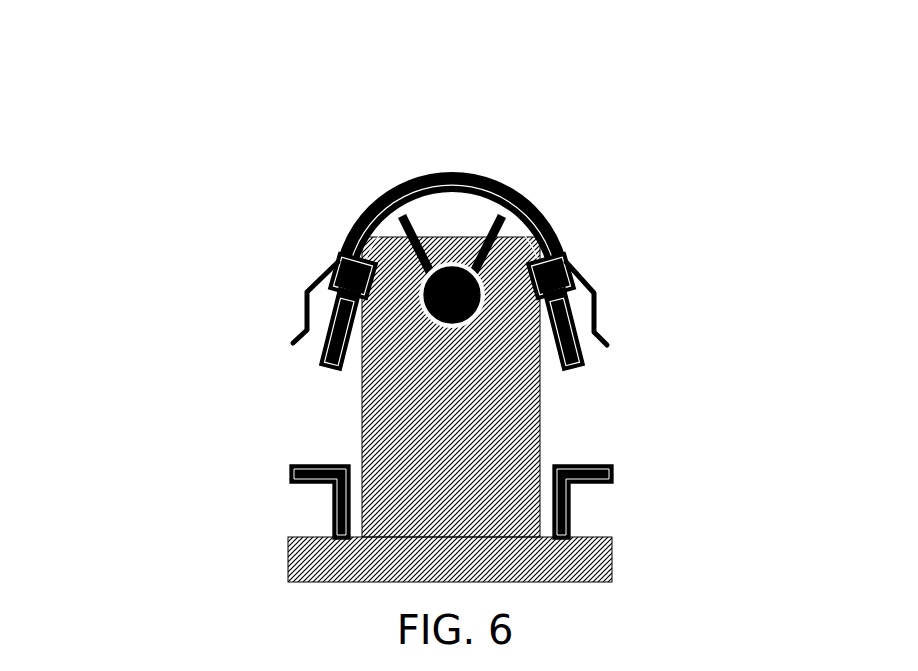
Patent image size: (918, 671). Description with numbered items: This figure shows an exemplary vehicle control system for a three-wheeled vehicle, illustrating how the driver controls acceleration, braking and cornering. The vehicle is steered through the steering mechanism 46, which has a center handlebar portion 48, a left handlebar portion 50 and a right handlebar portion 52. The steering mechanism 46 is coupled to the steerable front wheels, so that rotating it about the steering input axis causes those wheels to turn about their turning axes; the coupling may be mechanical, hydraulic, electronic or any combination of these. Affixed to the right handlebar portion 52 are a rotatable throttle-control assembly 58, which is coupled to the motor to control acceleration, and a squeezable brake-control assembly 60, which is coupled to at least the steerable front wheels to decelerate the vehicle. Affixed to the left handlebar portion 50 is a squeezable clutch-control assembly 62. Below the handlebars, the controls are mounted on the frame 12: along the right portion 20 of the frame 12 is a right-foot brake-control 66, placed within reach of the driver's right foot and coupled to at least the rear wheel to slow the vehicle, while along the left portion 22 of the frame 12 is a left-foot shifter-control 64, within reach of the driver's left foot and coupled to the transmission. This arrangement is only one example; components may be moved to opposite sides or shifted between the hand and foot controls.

The frame 12 is at (407, 423).
The right portion 20 is at (798, 446).
The left portion 22 is at (65, 436).
The steering mechanism 46 is at (408, 173).
The center handlebar portion 48 is at (450, 182).
The left handlebar portion 50 is at (348, 228).
The right handlebar portion 52 is at (548, 223).
The rotatable throttle-control assembly 58 is at (585, 370).
The squeezable brake-control assembly 60 is at (598, 292).
The squeezable clutch-control assembly 62 is at (305, 292).
The left-foot shifter-control 64 is at (318, 497).
The right-foot brake-control 66 is at (582, 497).